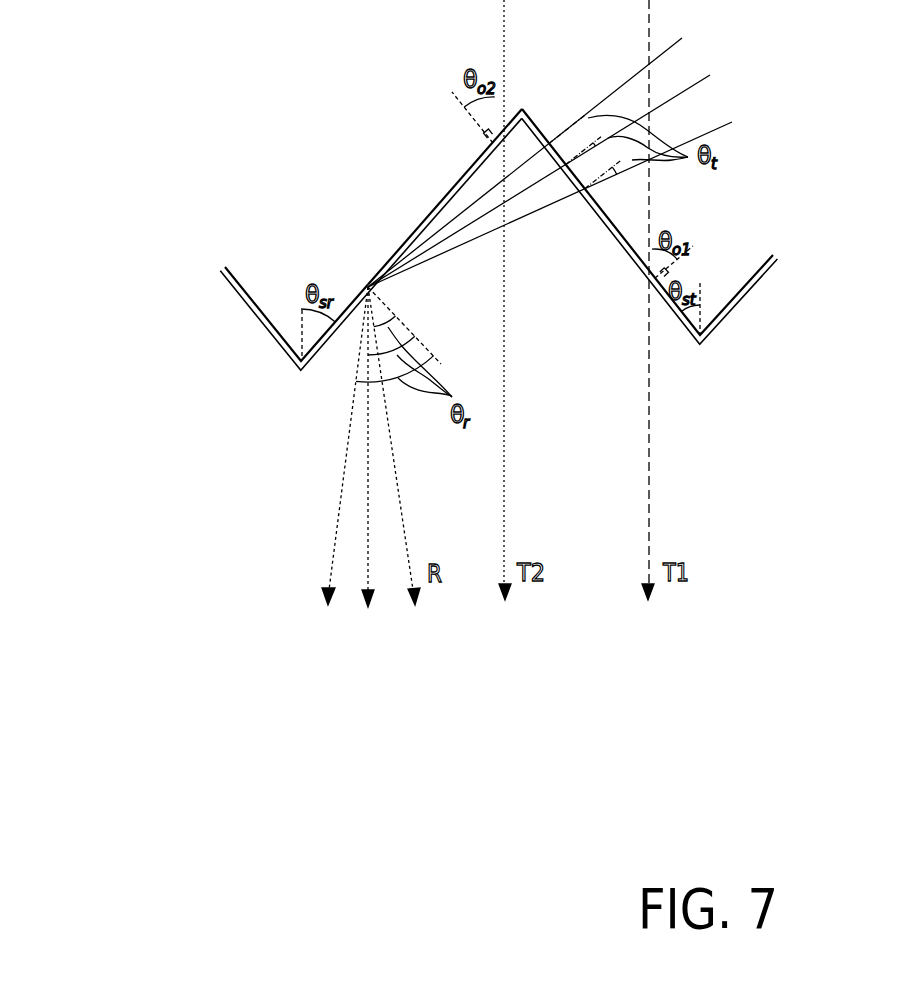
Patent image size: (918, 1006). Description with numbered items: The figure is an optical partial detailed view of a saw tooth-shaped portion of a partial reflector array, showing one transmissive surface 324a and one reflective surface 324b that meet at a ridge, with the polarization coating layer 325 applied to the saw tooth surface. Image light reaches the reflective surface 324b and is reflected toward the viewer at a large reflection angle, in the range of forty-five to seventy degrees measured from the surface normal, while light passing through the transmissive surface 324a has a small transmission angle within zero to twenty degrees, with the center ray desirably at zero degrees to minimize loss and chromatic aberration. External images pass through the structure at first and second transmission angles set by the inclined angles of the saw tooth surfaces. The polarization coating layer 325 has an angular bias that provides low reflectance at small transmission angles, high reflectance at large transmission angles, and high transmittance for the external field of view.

The transmissive surface 324a is at (538, 128).
The reflective surface 324b is at (371, 239).
The polarization coating layer 325 is at (417, 235).